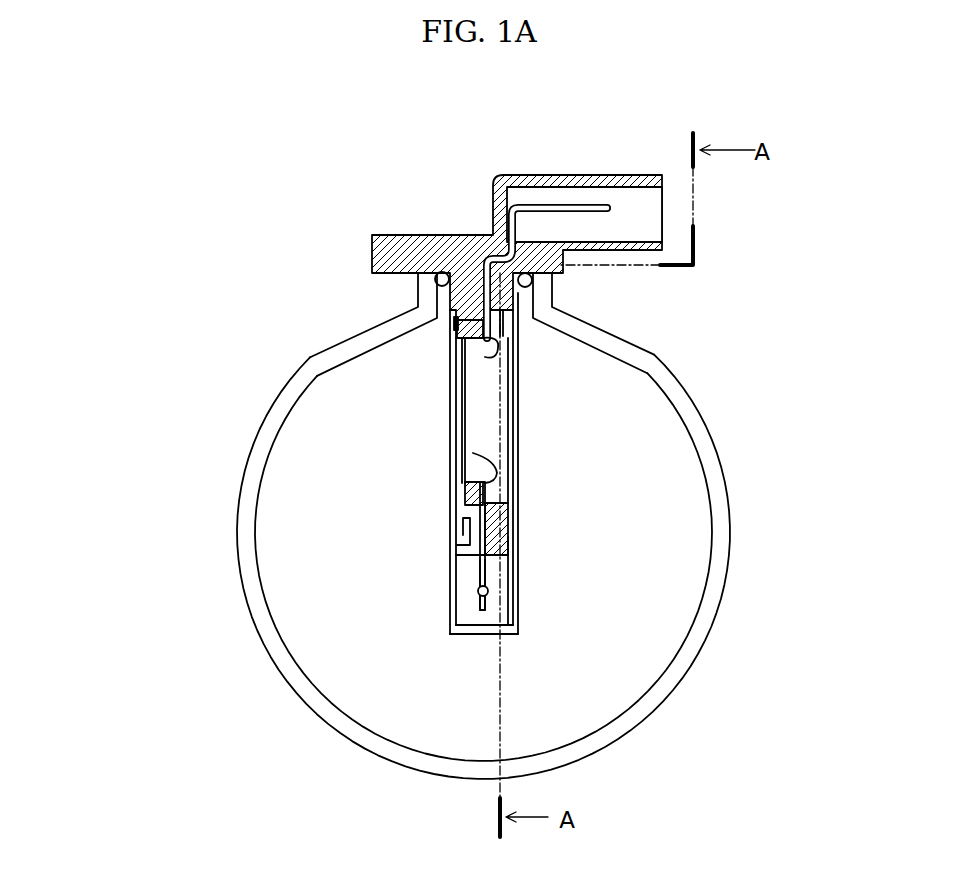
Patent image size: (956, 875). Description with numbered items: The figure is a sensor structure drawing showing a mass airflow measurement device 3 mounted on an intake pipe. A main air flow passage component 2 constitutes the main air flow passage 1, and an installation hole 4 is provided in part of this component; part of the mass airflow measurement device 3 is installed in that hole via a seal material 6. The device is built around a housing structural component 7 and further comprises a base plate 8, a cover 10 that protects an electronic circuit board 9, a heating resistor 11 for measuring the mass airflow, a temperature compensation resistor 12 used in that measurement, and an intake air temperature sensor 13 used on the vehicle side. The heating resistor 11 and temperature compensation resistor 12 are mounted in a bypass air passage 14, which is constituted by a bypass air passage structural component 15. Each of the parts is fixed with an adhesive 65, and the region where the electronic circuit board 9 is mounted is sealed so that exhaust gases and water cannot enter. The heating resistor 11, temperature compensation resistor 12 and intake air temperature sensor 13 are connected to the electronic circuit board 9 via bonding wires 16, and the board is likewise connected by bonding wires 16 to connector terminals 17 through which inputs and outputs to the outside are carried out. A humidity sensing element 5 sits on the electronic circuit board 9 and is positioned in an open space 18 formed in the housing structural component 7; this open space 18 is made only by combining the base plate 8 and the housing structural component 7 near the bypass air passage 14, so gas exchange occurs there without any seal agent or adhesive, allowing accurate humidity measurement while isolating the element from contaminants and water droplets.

The main air flow passage 1 is at (580, 675).
The main air flow passage component 2 is at (690, 653).
The mass airflow measurement device 3 is at (578, 175).
The installation hole 4 is at (430, 306).
The humidity sensing element 5 is at (490, 524).
The seal material 6 is at (535, 283).
The housing structural component 7 is at (433, 238).
The base plate 8 is at (450, 412).
The electronic circuit board 9 is at (518, 385).
The cover 10 is at (518, 430).
The heating resistor 11 is at (478, 591).
The temperature compensation resistor 12 is at (482, 603).
The intake air temperature sensor 13 is at (482, 573).
The bypass air passage 14 is at (505, 603).
The bypass air passage structural component 15 is at (467, 630).
The bonding wires 16 is at (524, 310).
The connector terminals 17 is at (607, 208).
The open space 18 is at (460, 547).
The adhesive 65 is at (457, 325).